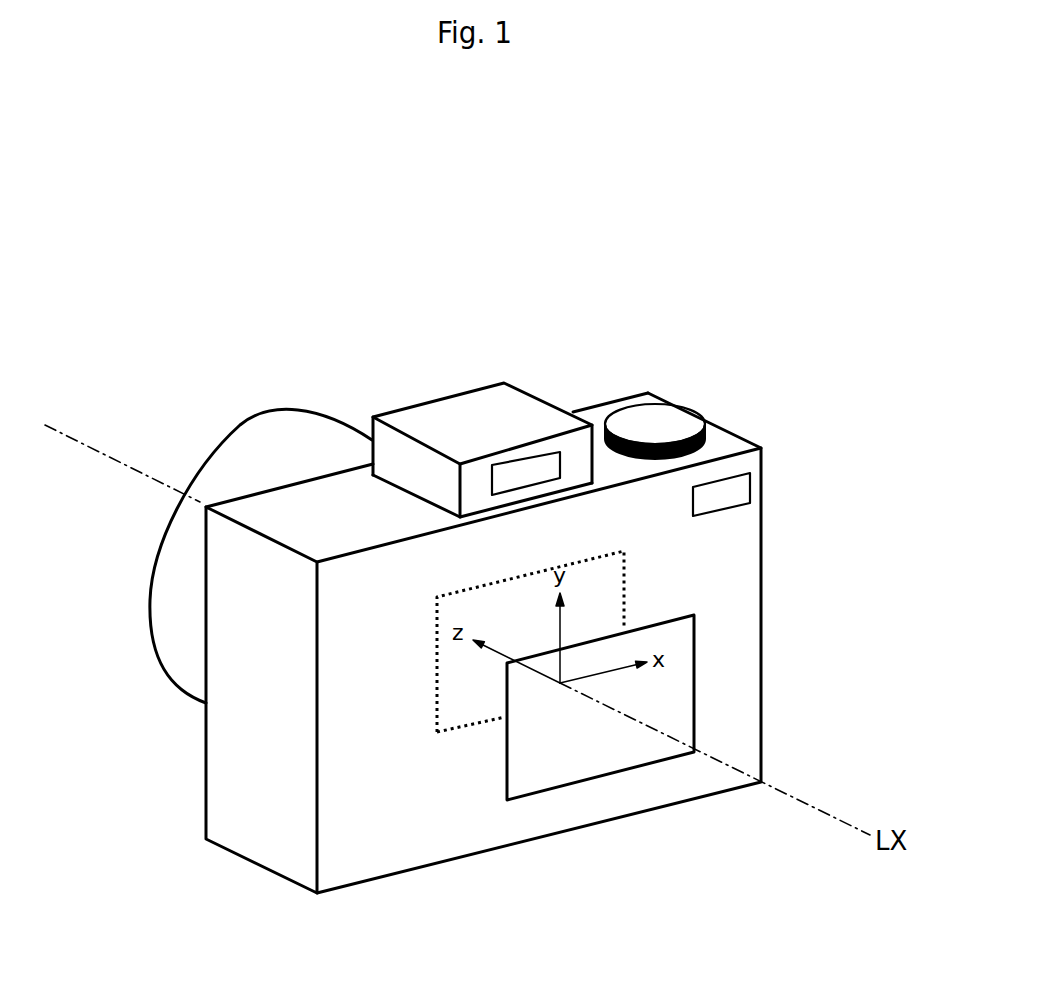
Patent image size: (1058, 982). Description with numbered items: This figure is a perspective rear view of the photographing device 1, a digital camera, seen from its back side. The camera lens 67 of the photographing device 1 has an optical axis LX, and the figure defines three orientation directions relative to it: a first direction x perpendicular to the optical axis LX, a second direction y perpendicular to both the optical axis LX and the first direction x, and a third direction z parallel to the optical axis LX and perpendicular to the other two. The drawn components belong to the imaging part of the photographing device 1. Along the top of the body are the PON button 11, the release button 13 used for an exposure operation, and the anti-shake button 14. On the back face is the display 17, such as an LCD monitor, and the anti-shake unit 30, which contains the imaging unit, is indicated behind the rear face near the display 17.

The photographing device 1 is at (648, 393).
The PON button 11 is at (750, 476).
The release button 13 is at (683, 405).
The anti-shake button 14 is at (505, 467).
The display 17 is at (695, 633).
The anti-shake unit 30 is at (624, 552).
The camera lens 67 is at (329, 418).